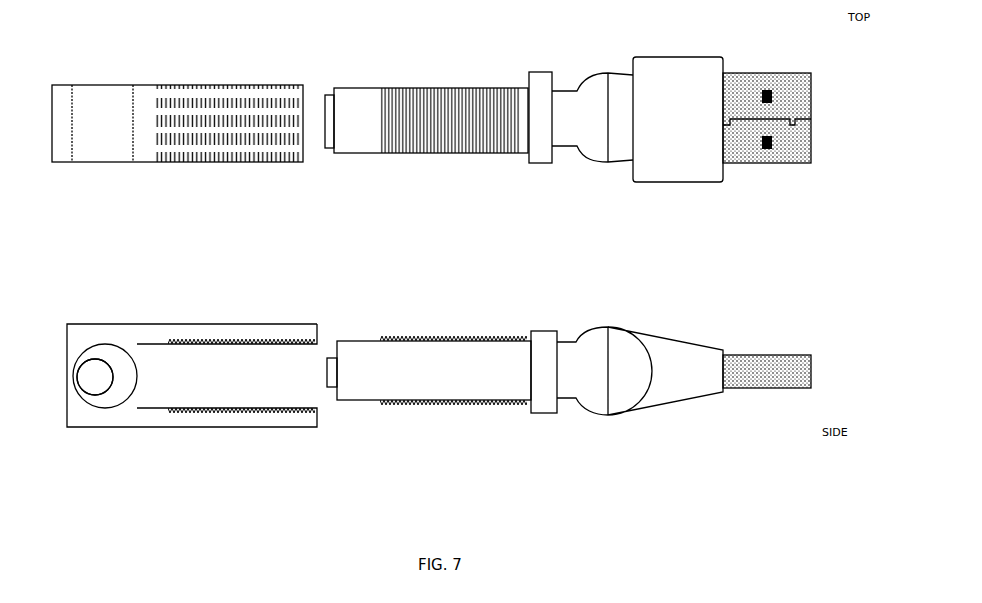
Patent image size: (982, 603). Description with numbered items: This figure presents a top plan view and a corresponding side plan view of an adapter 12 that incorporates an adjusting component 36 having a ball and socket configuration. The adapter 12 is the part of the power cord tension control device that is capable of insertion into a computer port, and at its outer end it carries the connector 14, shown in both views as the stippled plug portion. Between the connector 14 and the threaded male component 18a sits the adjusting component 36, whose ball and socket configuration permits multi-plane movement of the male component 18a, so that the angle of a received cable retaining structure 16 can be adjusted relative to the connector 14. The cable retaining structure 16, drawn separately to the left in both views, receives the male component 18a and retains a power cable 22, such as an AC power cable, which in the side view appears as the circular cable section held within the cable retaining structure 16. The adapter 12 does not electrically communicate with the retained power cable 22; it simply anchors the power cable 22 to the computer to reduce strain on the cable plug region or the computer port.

The adapter 12 is at (486, 165).
The connector 14 is at (755, 57).
The cable retaining structure 16 is at (160, 72).
The male component 18a is at (470, 100).
The power cable 22 is at (95, 383).
The adjusting component 36 is at (643, 42).